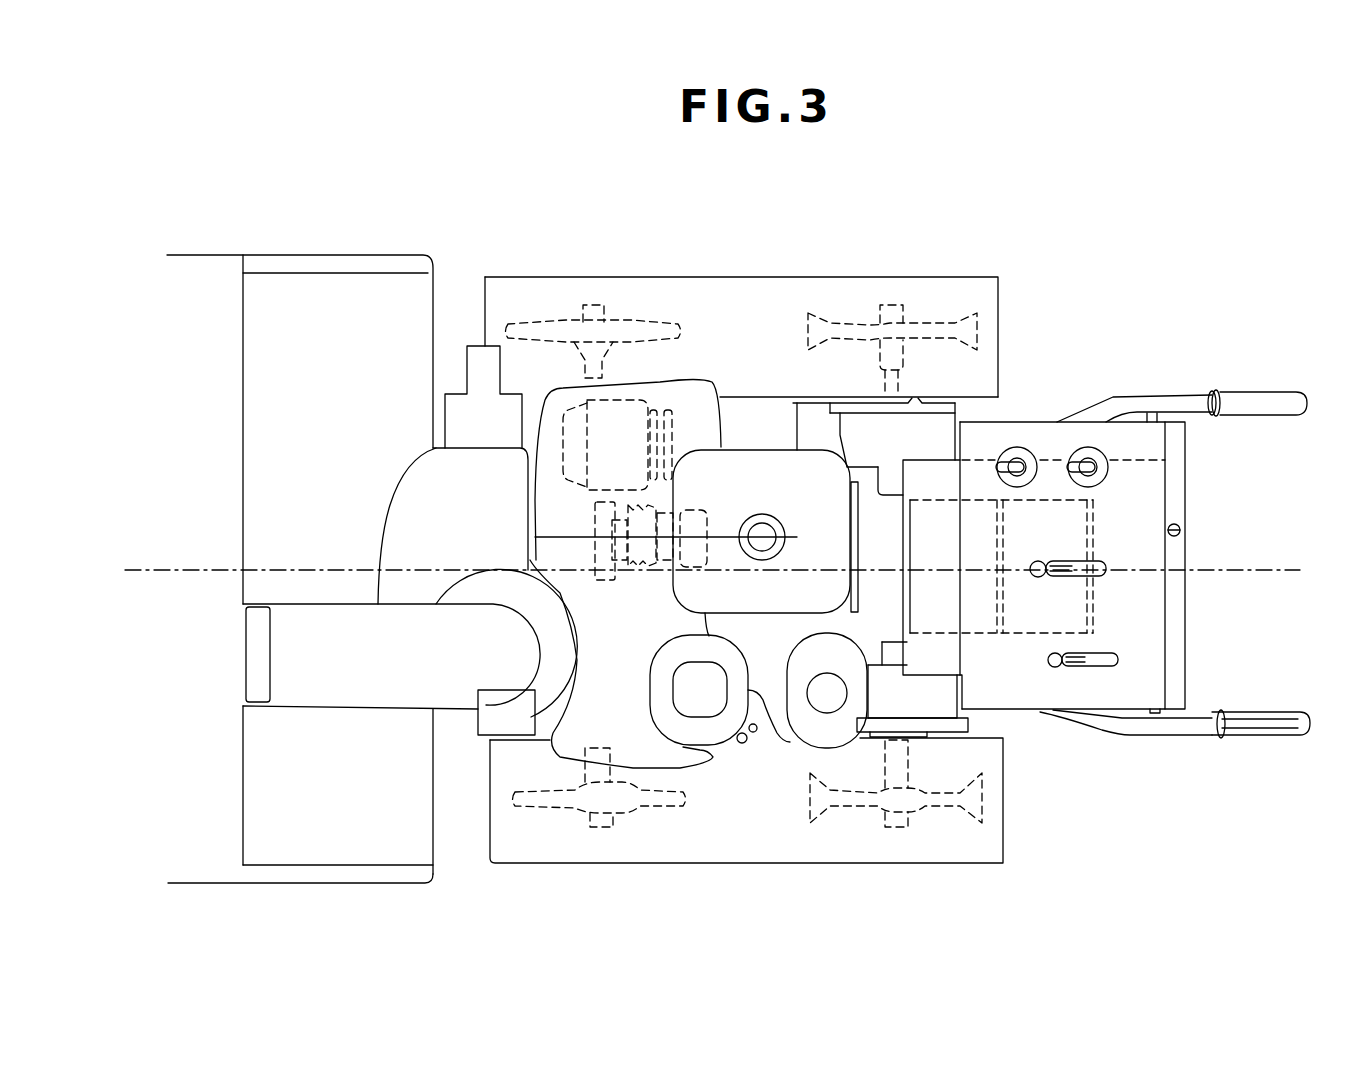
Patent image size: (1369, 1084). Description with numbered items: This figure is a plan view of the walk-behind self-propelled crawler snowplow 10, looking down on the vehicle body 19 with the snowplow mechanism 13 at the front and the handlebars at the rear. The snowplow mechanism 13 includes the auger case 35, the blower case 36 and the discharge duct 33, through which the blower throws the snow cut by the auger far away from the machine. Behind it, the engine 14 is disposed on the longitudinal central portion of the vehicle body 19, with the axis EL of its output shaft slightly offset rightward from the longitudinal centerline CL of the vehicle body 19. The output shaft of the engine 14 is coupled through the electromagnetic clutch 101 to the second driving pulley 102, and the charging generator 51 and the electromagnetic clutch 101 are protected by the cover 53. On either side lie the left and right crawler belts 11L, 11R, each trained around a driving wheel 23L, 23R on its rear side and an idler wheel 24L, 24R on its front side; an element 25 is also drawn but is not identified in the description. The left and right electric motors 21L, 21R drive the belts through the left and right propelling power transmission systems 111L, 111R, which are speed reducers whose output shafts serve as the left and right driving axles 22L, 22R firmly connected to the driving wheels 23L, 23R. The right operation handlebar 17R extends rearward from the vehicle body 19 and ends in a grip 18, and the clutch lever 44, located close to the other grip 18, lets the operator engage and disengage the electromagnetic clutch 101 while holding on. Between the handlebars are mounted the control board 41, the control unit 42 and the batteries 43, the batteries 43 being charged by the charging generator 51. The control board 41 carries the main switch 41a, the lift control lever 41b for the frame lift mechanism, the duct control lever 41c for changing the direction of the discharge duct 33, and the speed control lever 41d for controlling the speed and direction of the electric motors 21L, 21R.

The crawler snowplow 10 is at (1216, 269).
The right crawler belt 11R is at (955, 285).
The left crawler belt 11L is at (977, 843).
The snowplow mechanism 13 is at (217, 403).
The engine 14 is at (765, 463).
The right operation handlebar 17R is at (1183, 398).
The grip 18 is at (1278, 392).
The vehicle body 19 is at (912, 401).
The right electric motor 21R is at (890, 496).
The left electric motor 21L is at (892, 642).
The right driving axle 22R is at (893, 306).
The left driving axle 22L is at (896, 828).
The right driving wheel 23R is at (845, 323).
The left driving wheel 23L is at (855, 808).
The right idler wheel 24R is at (534, 326).
The left idler wheel 24L is at (653, 808).
The lever stem 25 is at (603, 827).
The discharge duct 33 is at (331, 688).
The auger case 35 is at (347, 845).
The blower case 36 is at (410, 515).
The control board 41 is at (1188, 610).
The main switch 41a is at (1180, 525).
The lift control lever 41b is at (1089, 460).
The duct control lever 41c is at (1017, 460).
The speed control lever 41d is at (1054, 667).
The control unit 42 is at (931, 462).
The batteries 43 is at (983, 636).
The clutch lever 44 is at (1265, 718).
The charging generator 51 is at (632, 408).
The cover 53 is at (690, 385).
The electromagnetic clutch 101 is at (605, 585).
The second driving pulley 102 is at (638, 568).
The right propelling power transmission system 111R is at (872, 437).
The left propelling power transmission system 111L is at (893, 703).
The axis of the output shaft EL is at (718, 536).
The longitudinal centerline CL is at (1280, 568).